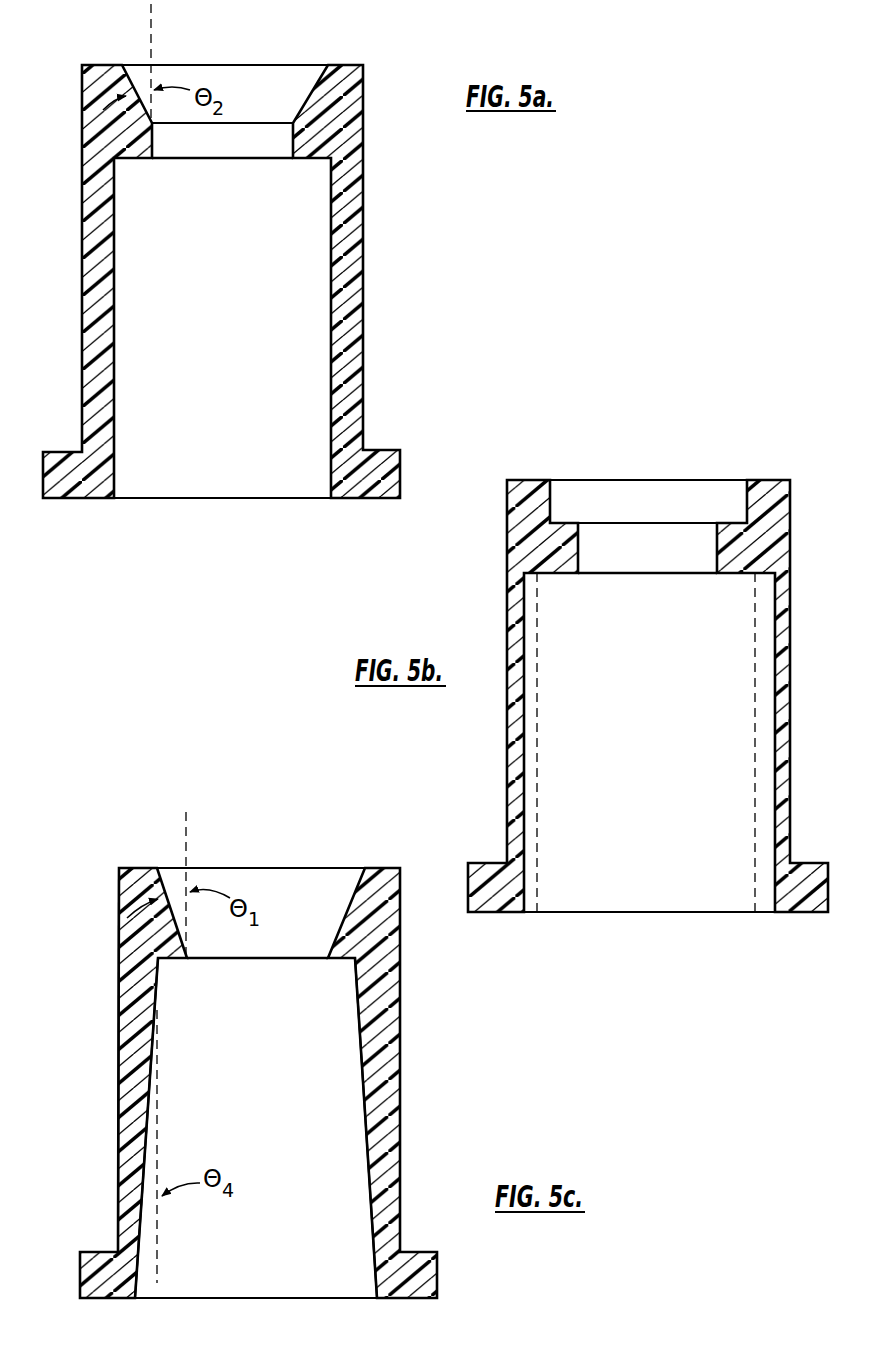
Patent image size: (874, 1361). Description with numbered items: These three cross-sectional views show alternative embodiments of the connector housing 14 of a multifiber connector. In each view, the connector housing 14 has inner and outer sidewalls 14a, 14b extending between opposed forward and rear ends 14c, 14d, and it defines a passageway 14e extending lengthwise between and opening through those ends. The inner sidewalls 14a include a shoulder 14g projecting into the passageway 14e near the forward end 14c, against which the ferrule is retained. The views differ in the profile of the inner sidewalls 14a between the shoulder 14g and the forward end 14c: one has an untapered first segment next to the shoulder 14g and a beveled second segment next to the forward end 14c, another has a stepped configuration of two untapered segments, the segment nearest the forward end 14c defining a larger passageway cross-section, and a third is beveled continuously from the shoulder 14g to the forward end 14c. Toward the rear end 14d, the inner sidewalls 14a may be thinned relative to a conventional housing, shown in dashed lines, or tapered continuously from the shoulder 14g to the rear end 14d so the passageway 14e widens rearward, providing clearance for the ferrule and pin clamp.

In FIG. 5a, the connector housing 14 is at (350, 176).
In FIG. 5b, the connector housing 14 is at (782, 593).
In FIG. 5c, the connector housing 14 is at (127, 1012).
In FIG. 5a, the inner sidewalls 14a is at (115, 435).
In FIG. 5b, the inner sidewalls 14a is at (525, 832).
In FIG. 5c, the inner sidewalls 14a is at (375, 1260).
In FIG. 5a, the outer sidewalls 14b is at (82, 397).
In FIG. 5b, the outer sidewalls 14b is at (507, 812).
In FIG. 5c, the outer sidewalls 14b is at (138, 1194).
In FIG. 5a, the forward end 14c is at (345, 65).
In FIG. 5b, the forward end 14c is at (773, 480).
In FIG. 5c, the forward end 14c is at (143, 868).
In FIG. 5a, the rear end 14d is at (352, 500).
In FIG. 5b, the rear end 14d is at (780, 913).
In FIG. 5c, the rear end 14d is at (388, 1299).
In FIG. 5a, the passageway 14e is at (303, 325).
In FIG. 5b, the passageway 14e is at (735, 748).
In FIG. 5c, the passageway 14e is at (335, 1130).
In FIG. 5a, the shoulder 14g is at (307, 159).
In FIG. 5b, the shoulder 14g is at (730, 574).
In FIG. 5c, the shoulder 14g is at (343, 959).